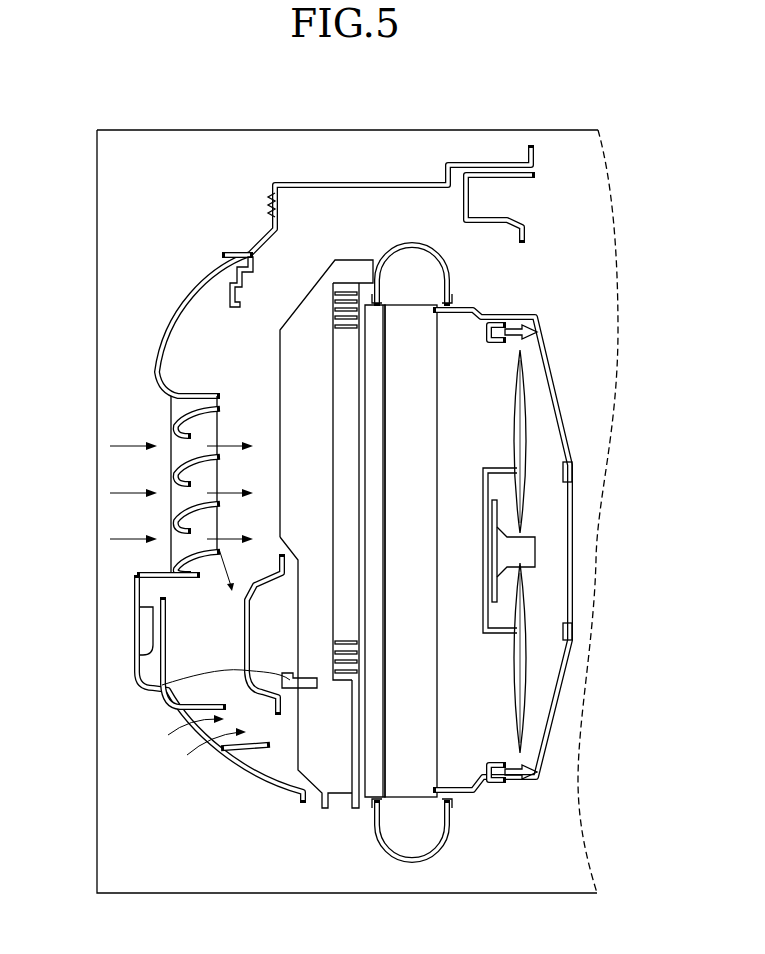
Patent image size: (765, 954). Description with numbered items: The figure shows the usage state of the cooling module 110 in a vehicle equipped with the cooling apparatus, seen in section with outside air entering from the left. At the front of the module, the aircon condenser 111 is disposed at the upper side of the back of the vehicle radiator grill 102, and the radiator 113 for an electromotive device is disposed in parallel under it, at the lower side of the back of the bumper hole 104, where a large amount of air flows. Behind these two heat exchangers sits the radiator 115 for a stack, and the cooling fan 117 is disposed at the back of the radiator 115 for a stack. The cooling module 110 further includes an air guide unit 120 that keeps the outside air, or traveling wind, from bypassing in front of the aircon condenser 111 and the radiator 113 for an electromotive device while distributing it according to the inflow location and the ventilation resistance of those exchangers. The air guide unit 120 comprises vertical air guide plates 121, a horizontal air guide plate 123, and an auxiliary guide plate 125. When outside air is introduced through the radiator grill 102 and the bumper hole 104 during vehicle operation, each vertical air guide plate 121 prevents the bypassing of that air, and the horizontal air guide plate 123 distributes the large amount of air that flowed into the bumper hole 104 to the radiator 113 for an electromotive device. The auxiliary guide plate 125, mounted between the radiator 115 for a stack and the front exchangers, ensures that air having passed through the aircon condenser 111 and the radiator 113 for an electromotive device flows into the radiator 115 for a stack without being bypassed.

The vehicle radiator grill 102 is at (190, 413).
The bumper hole 104 is at (220, 745).
The cooling module 110 is at (517, 284).
The aircon condenser 111 is at (347, 346).
The radiator for an electromotive device 113 is at (333, 787).
The radiator for a stack 115 is at (420, 742).
The cooling fan 117 is at (535, 318).
The air guide unit 120 is at (259, 629).
The vertical air guide plates 121 is at (307, 338).
The horizontal air guide plate 123 is at (172, 690).
The auxiliary guide plate 125 is at (372, 783).